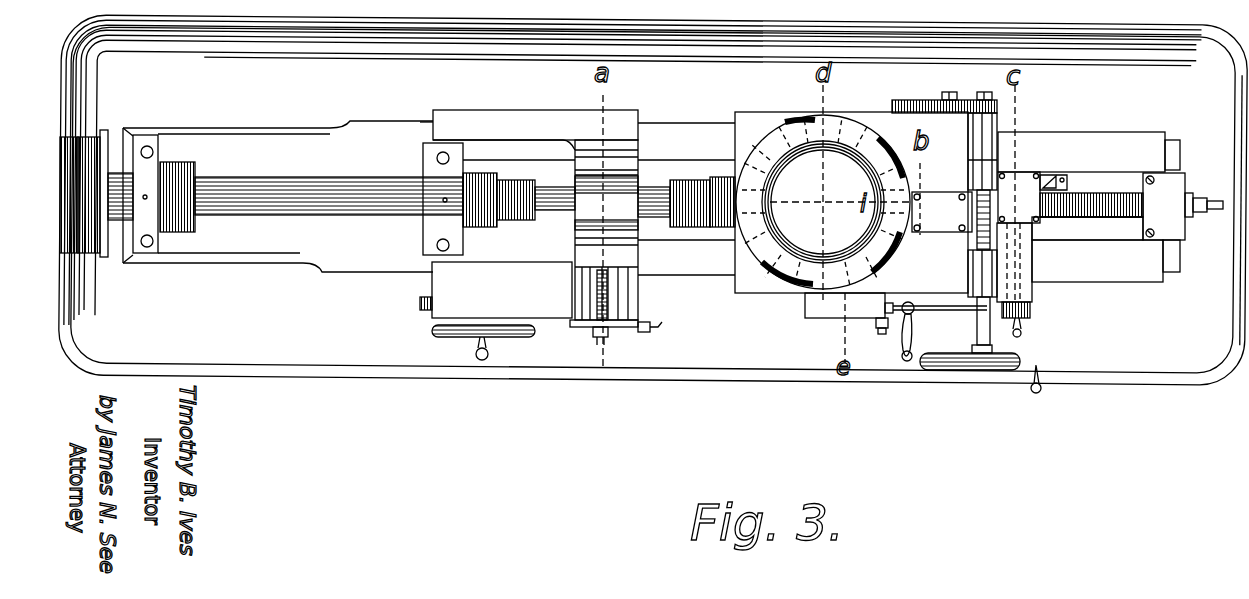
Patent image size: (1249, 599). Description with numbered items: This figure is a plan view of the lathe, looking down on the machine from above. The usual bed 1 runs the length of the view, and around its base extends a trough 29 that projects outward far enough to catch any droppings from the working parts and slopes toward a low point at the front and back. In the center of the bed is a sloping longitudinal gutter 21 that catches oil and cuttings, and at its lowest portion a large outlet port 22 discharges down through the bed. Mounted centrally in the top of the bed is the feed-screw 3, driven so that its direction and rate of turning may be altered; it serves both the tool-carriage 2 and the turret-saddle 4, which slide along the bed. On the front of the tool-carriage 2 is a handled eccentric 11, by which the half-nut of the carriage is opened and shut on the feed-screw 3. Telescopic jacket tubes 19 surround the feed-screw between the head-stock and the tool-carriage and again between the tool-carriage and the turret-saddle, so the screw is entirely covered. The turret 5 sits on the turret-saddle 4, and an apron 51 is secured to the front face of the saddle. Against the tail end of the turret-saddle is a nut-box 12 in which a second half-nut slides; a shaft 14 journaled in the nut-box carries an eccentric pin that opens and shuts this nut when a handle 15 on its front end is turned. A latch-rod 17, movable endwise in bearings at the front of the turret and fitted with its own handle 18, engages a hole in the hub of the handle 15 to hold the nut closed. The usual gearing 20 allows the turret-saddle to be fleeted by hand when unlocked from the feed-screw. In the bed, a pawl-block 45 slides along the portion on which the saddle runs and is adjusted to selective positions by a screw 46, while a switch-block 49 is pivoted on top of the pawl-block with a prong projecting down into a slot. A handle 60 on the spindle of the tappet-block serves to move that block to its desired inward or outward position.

The bed 1 is at (273, 138).
The tool-carriage 2 is at (440, 287).
The feed-screw 3 is at (330, 197).
The turret-saddle 4 is at (748, 114).
The turret 5 is at (775, 142).
The handled eccentric 11 is at (653, 322).
The nut-box 12 is at (1033, 188).
The shaft 14 is at (1025, 258).
The handle 15 is at (1031, 312).
The latch-rod 17 is at (929, 312).
The handle 18 is at (900, 335).
The telescopic jacket tubes 19 is at (516, 222).
The gearing 20 is at (915, 112).
The sloping longitudinal gutter 21 is at (697, 170).
The outlet port 22 is at (555, 172).
The trough 29 is at (1097, 360).
The pawl-block 45 is at (1068, 238).
The screw 46 is at (1210, 200).
The switch-block 49 is at (1073, 176).
The apron 51 is at (820, 319).
The handle 60 is at (878, 334).